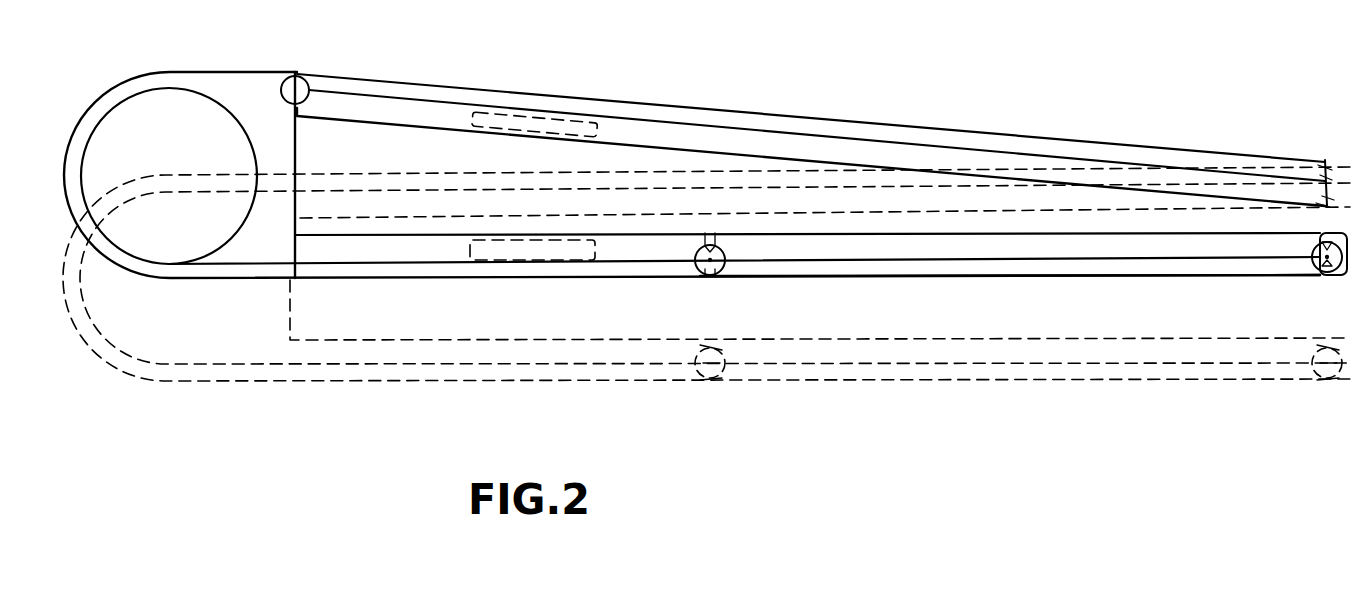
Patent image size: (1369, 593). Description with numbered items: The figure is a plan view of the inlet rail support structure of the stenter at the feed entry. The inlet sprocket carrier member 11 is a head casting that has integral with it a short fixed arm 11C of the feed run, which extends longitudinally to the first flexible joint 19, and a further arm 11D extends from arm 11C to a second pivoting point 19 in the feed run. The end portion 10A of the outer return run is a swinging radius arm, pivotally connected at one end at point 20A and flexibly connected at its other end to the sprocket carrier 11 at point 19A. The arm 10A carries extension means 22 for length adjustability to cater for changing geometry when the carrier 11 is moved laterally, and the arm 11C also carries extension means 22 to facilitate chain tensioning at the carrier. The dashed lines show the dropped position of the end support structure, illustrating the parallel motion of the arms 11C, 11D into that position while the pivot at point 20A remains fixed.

The inlet sprocket carrier member 11 is at (242, 80).
The pivot point 19A is at (304, 74).
The end portion of the outer run 10A is at (766, 118).
The pivot point 20A is at (1322, 162).
The extension means 22 is at (548, 120).
The fixed arm 11C is at (425, 272).
The further arm 11D is at (925, 271).
The flexible joint 19 is at (706, 274).